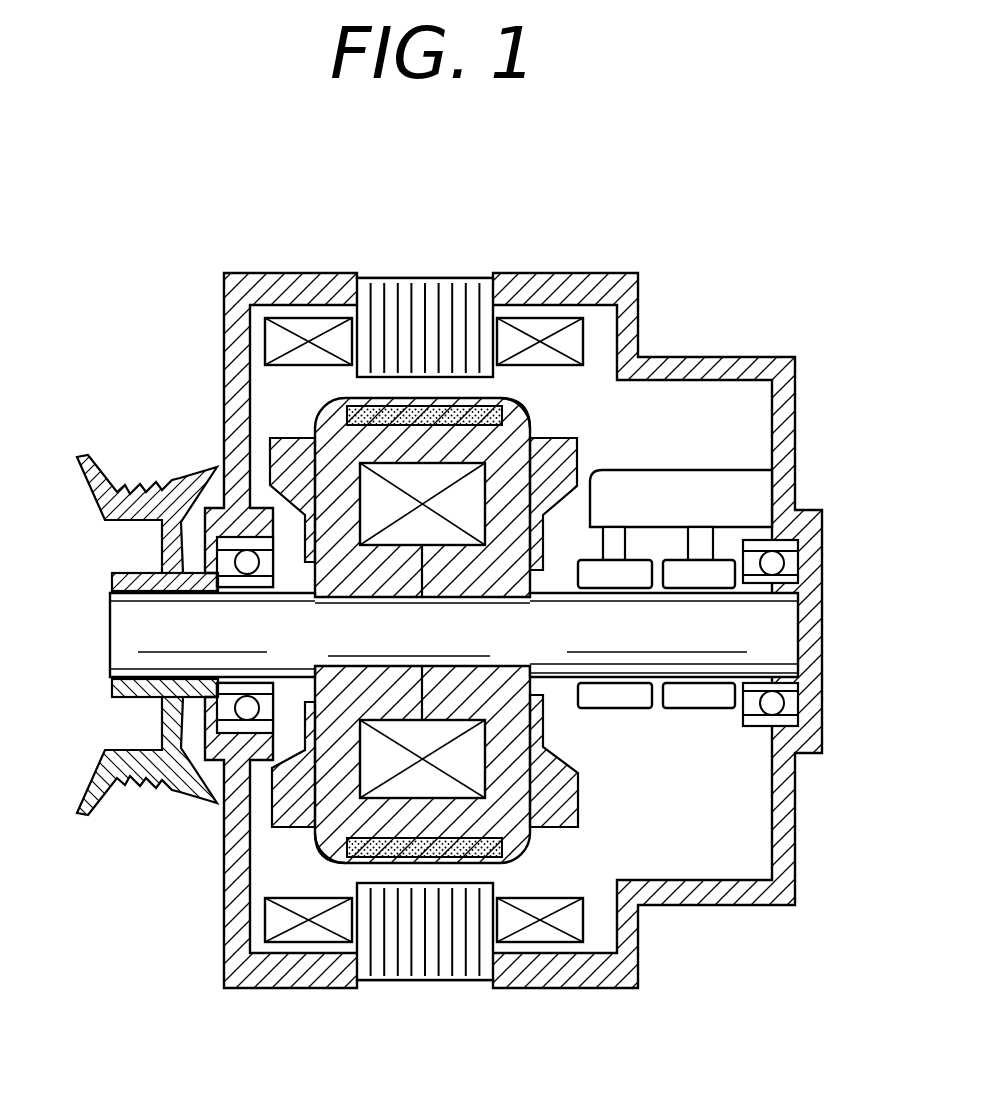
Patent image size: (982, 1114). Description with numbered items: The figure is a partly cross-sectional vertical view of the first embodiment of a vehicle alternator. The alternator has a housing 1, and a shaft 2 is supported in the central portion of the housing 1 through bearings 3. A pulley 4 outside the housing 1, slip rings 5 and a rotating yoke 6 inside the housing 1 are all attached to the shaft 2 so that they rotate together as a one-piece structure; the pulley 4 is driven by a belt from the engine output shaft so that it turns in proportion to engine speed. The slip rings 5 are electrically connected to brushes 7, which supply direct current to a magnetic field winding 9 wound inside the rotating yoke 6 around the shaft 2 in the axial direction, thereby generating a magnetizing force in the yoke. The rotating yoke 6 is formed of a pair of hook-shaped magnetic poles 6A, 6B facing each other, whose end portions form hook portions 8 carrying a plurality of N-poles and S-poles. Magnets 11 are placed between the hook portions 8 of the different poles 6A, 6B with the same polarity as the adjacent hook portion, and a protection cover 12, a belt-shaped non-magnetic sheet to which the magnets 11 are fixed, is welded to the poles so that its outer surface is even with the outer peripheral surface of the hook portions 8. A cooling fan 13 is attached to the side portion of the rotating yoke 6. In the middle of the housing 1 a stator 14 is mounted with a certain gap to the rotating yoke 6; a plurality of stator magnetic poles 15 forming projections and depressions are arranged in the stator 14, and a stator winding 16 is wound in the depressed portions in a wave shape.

The housing 1 is at (826, 520).
The shaft 2 is at (125, 628).
The bearings 3 is at (236, 711).
The pulley 4 is at (140, 478).
The slip rings 5 is at (700, 697).
The rotating yoke 6 is at (312, 418).
The hook-shaped magnetic pole 6A is at (330, 778).
The hook-shaped magnetic pole 6B is at (520, 822).
The brushes 7 is at (697, 553).
The hook portions 8 is at (520, 407).
The magnetic field winding 9 is at (480, 775).
The magnets 11 is at (490, 858).
The protection cover 12 is at (350, 865).
The cooling fan 13 is at (575, 462).
The stator 14 is at (421, 278).
The stator magnetic poles 15 is at (458, 290).
The stator winding 16 is at (304, 328).